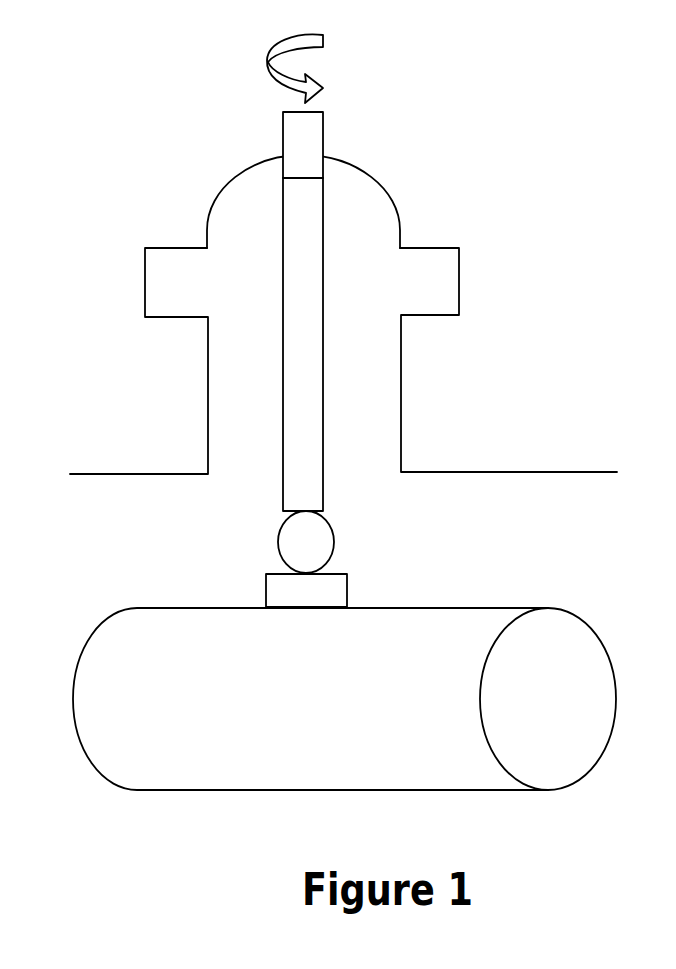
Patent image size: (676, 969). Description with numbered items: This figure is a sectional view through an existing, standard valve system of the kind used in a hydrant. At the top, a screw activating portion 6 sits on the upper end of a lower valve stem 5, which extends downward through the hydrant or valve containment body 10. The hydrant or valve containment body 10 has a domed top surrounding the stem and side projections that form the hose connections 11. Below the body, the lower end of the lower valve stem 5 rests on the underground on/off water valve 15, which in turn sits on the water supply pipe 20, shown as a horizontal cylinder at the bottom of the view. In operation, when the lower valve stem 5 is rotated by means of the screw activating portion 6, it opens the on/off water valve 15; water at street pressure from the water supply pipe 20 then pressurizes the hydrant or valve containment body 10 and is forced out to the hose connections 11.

The lower valve stem 5 is at (283, 213).
The screw activating portion 6 is at (323, 135).
The hydrant or valve containment body 10 is at (398, 223).
The hose connections 11 is at (459, 275).
The on/off water valve 15 is at (335, 560).
The water supply pipe 20 is at (217, 790).